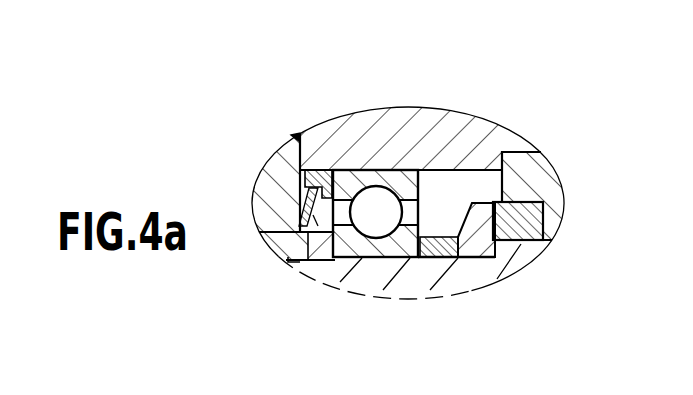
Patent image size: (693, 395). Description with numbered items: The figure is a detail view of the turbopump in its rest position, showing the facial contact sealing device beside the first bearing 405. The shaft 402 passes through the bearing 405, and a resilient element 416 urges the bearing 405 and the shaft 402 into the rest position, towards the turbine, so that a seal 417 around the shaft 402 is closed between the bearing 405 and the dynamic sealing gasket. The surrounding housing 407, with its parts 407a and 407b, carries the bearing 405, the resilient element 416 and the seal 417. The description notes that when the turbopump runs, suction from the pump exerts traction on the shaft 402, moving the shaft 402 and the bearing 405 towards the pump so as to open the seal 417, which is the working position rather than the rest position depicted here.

The shaft 402 is at (478, 283).
The first bearing 405 is at (368, 168).
The bearing housing 407 is at (428, 126).
The first housing part 407a is at (264, 168).
The second housing part 407b is at (535, 252).
The resilient element 416 is at (326, 258).
The seal 417 is at (530, 222).